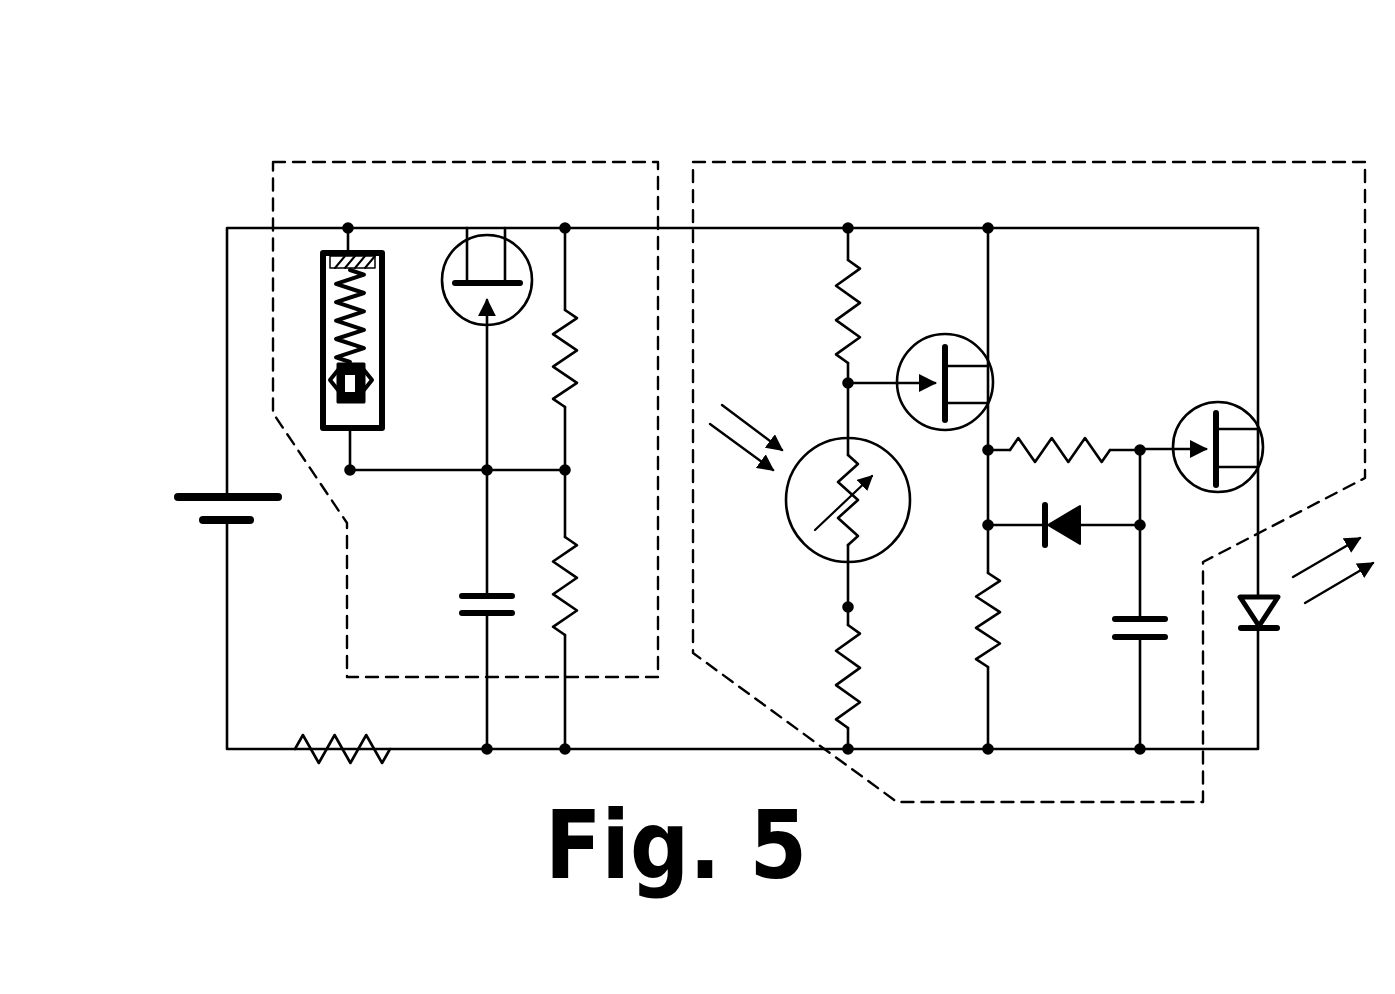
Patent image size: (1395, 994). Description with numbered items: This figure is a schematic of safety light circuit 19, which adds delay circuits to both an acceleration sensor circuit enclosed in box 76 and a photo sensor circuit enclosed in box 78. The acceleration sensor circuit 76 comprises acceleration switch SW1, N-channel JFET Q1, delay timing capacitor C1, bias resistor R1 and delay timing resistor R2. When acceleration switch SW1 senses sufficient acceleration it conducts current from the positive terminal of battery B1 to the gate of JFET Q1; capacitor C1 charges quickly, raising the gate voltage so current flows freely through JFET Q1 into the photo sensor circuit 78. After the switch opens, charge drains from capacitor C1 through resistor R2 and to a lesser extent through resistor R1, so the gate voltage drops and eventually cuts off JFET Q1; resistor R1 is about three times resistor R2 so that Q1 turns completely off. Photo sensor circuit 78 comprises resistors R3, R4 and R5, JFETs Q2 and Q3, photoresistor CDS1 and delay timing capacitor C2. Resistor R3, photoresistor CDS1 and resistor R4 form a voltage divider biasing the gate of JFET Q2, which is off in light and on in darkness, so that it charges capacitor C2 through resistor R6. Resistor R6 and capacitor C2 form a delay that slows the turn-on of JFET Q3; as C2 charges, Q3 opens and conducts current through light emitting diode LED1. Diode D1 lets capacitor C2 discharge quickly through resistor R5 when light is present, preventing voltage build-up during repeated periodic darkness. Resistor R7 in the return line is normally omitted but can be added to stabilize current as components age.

The circuit 19 is at (1110, 134).
The acceleration sensor circuit 76 is at (480, 162).
The photo sensor circuit 78 is at (925, 162).
The battery B1 is at (205, 493).
The acceleration switch SW1 is at (296, 320).
The N-channel junction field effect transistor Q1 is at (447, 313).
The bias resistor R1 is at (568, 370).
The delay timing resistor R2 is at (565, 595).
The delay timing capacitor C1 is at (477, 592).
The resistor R7 is at (338, 755).
The resistor R3 is at (837, 342).
The junction field effect transistor Q2 is at (918, 340).
The photoresistor CDS1 is at (826, 558).
The resistor R4 is at (837, 673).
The resistor R5 is at (977, 617).
The resistor R6 is at (1035, 445).
The junction field effect transistor Q3 is at (1183, 420).
The diode D1 is at (1057, 542).
The delay timing capacitor C2 is at (1137, 642).
The light emitting diode LED1 is at (1277, 602).